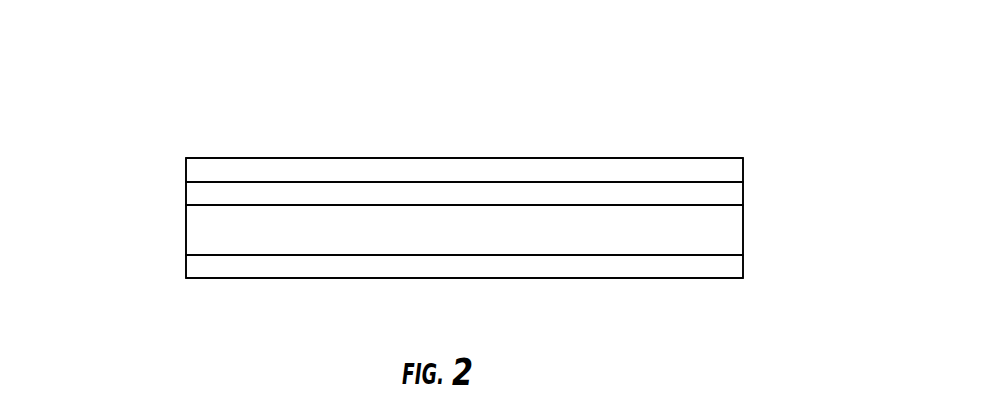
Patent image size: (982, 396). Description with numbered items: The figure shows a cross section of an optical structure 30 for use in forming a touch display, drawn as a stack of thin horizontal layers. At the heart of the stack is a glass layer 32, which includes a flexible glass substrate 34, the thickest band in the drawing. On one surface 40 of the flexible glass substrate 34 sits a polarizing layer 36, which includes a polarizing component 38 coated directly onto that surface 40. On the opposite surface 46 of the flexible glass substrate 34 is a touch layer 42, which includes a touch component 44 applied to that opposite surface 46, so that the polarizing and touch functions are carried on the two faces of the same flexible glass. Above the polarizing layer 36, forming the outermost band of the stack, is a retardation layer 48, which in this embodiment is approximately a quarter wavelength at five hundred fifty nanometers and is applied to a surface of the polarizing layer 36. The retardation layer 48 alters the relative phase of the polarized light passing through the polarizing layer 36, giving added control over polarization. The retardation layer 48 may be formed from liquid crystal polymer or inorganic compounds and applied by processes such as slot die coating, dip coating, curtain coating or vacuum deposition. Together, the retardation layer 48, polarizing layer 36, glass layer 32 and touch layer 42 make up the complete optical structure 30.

The optical structure 30 is at (744, 74).
The glass layer 32 is at (170, 230).
The flexible glass substrate 34 is at (732, 233).
The polarizing layer 36 is at (160, 193).
The polarizing component 38 is at (214, 188).
The surface 40 is at (339, 205).
The touch layer 42 is at (175, 270).
The touch component 44 is at (359, 263).
The opposite surface 46 is at (546, 255).
The retardation layer 48 is at (749, 153).